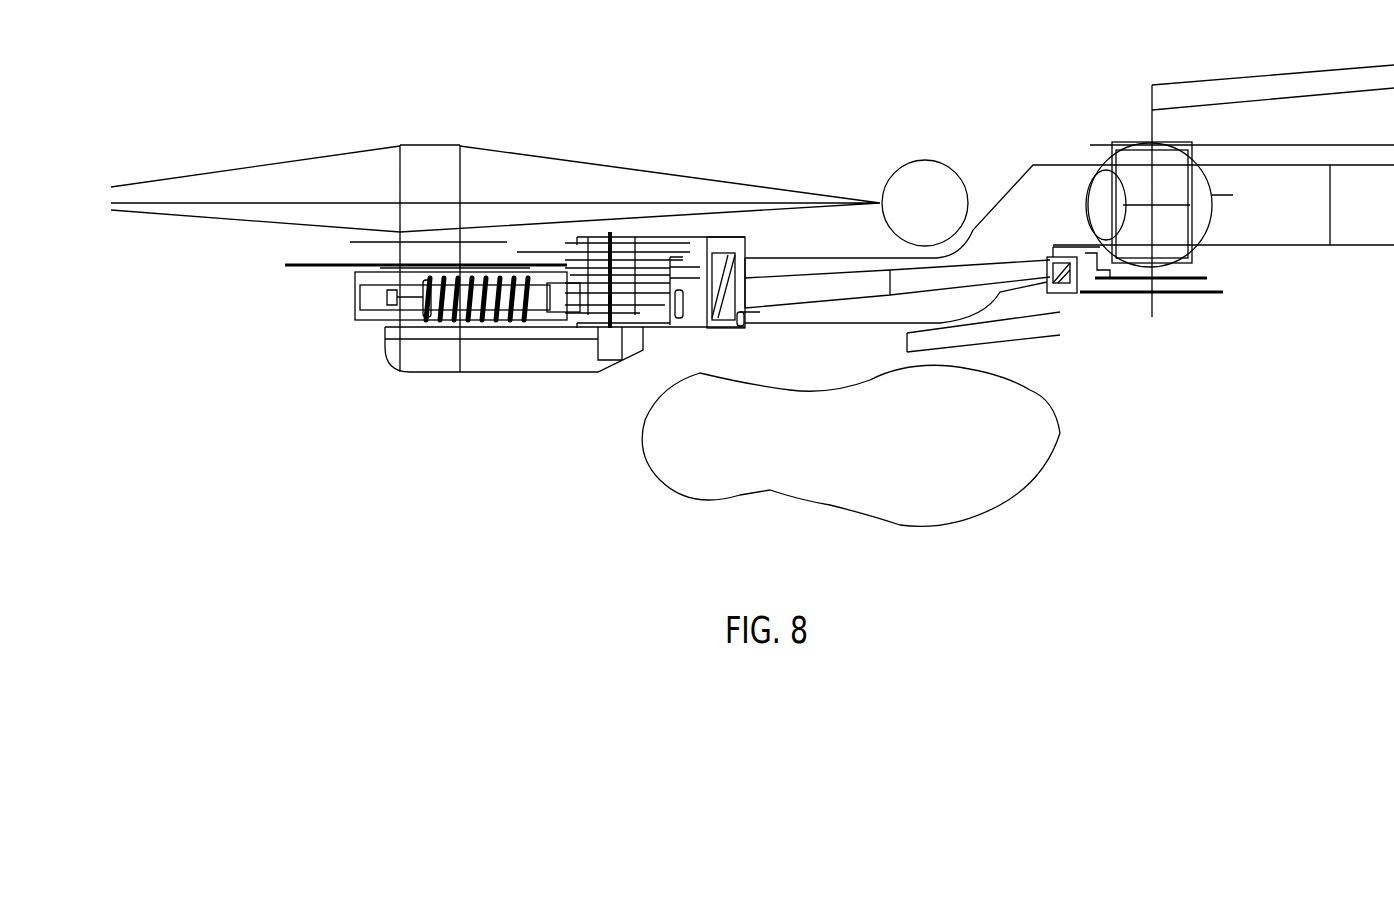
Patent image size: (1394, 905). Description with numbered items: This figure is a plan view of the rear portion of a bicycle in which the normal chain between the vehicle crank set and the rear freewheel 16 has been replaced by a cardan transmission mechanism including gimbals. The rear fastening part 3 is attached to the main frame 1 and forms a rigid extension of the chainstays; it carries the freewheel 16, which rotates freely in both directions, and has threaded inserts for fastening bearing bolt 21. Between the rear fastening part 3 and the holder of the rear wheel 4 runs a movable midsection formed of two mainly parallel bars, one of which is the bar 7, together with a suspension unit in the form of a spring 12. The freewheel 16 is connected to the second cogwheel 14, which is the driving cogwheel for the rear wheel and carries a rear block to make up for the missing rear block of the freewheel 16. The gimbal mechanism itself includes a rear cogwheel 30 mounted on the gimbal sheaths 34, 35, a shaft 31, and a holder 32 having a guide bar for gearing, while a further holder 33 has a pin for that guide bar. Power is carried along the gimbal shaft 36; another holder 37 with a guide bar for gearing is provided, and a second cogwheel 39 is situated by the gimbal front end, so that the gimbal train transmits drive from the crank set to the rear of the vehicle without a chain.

The main frame 1 is at (1027, 210).
The rear fastening part 3 is at (727, 243).
The rear wheel 4 is at (922, 190).
The bar 7 is at (497, 366).
The spring 12 is at (432, 313).
The second cogwheel 14 is at (350, 242).
The freewheel 16 is at (681, 330).
The bearing bolt 21 is at (612, 237).
The rear cogwheel 30 is at (680, 300).
The shaft 31 is at (697, 303).
The holder 32 is at (745, 322).
The holder 33 is at (745, 310).
The gimbal sheath 34 is at (847, 288).
The gimbal sheath 35 is at (987, 278).
The gimbal shaft 36 is at (1084, 265).
The holder 37 is at (1065, 285).
The second cogwheel 39 is at (1115, 280).